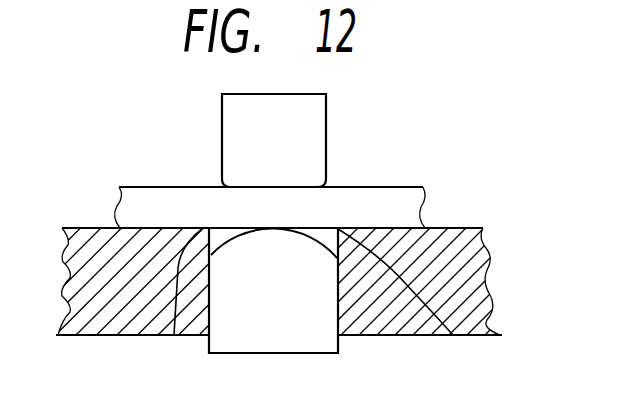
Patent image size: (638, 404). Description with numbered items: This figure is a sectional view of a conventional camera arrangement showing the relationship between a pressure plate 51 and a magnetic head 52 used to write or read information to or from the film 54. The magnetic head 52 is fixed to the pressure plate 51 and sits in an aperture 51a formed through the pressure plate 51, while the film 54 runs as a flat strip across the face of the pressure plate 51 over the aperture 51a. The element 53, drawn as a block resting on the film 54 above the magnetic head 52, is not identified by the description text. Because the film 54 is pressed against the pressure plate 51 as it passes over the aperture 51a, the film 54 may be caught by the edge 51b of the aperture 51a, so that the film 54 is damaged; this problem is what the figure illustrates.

The pressure plate 51 is at (381, 307).
The aperture 51a is at (228, 230).
The edge 51b is at (172, 338).
The magnetic head 52 is at (251, 343).
The punch 53 is at (307, 113).
The film 54 is at (380, 187).